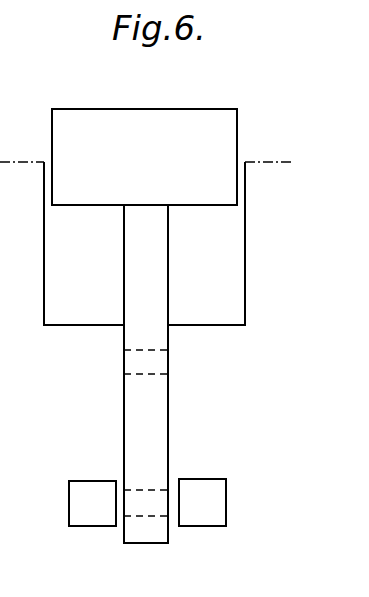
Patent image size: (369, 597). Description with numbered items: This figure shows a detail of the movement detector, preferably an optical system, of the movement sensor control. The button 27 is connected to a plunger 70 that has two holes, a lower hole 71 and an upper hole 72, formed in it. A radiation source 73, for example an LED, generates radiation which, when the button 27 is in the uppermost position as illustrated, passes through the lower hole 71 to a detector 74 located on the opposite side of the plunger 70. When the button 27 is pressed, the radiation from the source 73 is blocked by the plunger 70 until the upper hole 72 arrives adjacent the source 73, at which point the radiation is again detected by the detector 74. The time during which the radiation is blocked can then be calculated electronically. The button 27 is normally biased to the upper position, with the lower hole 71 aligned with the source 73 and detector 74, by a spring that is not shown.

The button 27 is at (142, 120).
The plunger 70 is at (124, 251).
The lower hole 71 is at (140, 506).
The upper hole 72 is at (162, 365).
The radiation source 73 is at (82, 481).
The detector 74 is at (211, 479).